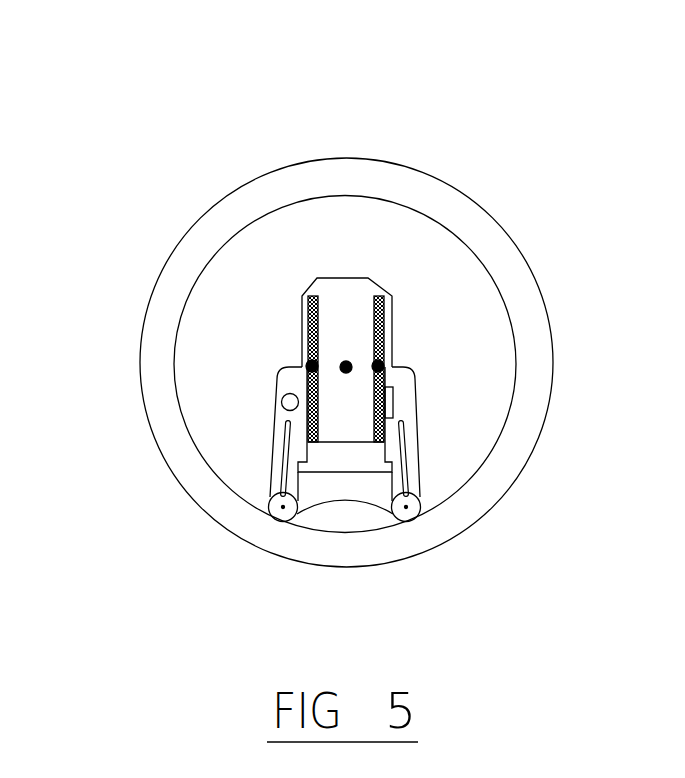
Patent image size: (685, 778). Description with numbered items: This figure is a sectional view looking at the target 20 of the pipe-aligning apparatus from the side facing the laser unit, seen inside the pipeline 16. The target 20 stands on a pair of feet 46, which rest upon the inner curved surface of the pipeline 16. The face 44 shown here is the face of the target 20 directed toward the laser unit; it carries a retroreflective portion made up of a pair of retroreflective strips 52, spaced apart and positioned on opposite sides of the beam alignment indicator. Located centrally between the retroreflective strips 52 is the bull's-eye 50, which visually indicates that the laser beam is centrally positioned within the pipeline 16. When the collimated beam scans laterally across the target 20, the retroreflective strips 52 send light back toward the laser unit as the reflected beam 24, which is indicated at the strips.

The pipeline 16 is at (418, 172).
The target 20 is at (430, 406).
The face 44 is at (364, 292).
The retroreflective strips 52 is at (312, 320).
The reflected beam 24 is at (307, 364).
The central bull's-eye 50 is at (346, 361).
The feet 46 is at (270, 500).